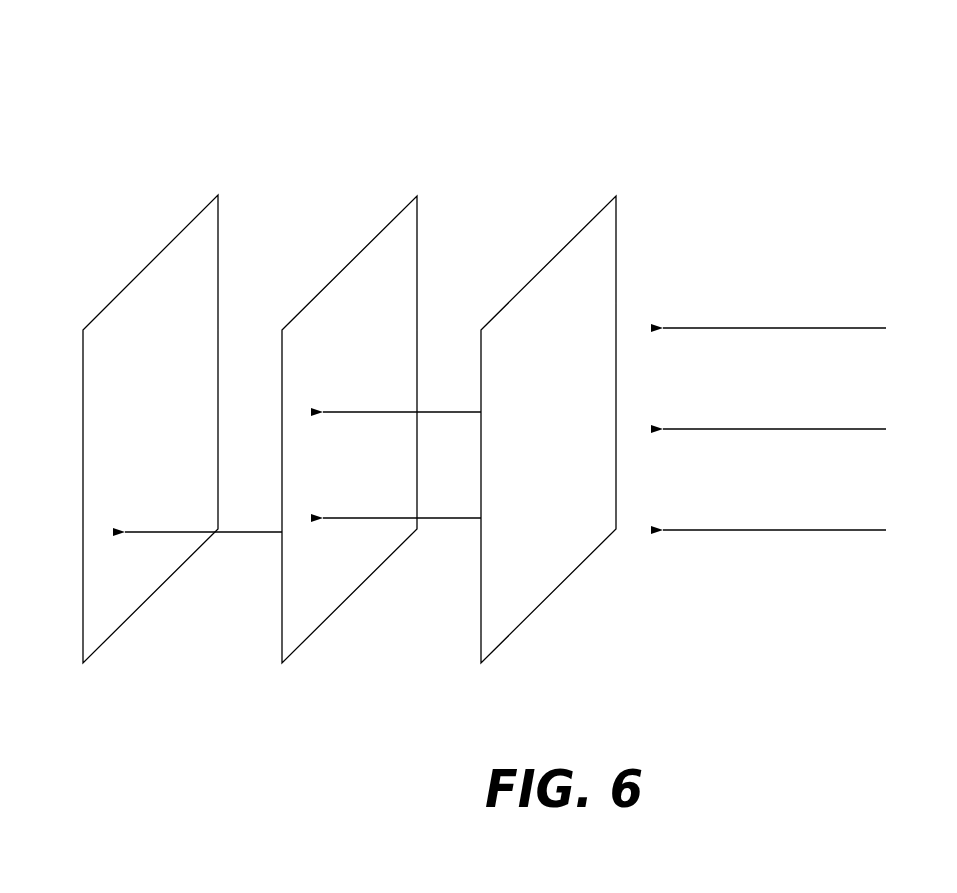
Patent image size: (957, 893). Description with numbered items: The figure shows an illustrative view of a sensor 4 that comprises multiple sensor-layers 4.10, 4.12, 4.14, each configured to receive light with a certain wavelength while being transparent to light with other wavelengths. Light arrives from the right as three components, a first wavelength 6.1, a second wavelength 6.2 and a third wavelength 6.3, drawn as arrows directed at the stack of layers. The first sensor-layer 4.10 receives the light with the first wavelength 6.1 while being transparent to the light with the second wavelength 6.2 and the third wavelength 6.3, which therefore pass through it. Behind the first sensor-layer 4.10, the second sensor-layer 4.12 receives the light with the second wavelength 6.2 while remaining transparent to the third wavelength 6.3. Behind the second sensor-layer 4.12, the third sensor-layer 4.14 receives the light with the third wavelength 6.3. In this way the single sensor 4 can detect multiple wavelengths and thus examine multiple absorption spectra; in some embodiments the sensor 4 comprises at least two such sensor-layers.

The sensor 4 is at (438, 97).
The first sensor-layer 4.10 is at (583, 260).
The second sensor-layer 4.12 is at (383, 260).
The third sensor-layer 4.14 is at (173, 260).
The first wavelength 6.1 is at (865, 328).
The second wavelength 6.2 is at (865, 429).
The third wavelength 6.3 is at (865, 530).